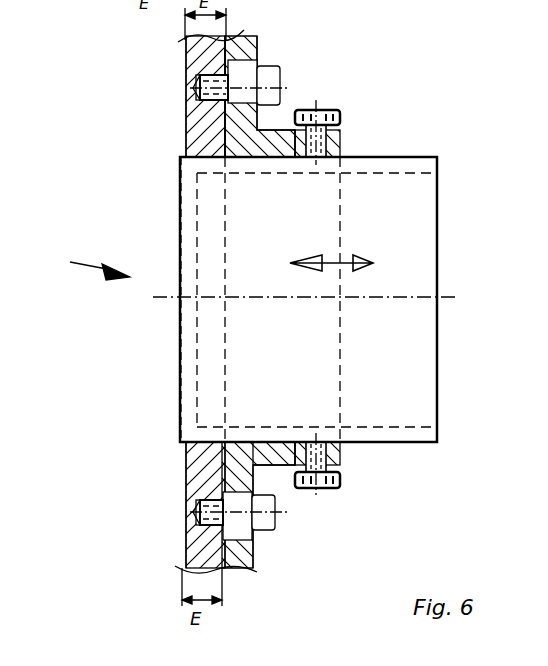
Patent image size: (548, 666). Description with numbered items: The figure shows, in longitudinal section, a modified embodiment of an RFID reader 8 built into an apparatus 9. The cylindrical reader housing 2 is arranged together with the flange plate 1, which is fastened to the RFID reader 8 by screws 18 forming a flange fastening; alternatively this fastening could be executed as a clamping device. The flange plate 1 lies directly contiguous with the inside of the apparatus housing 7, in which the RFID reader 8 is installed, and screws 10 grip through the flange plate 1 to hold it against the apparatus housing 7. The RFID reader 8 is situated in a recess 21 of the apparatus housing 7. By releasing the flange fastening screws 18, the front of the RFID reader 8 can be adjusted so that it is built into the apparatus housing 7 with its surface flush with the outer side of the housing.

The flange plate 1 is at (242, 58).
The reader housing 2 is at (177, 198).
The apparatus housing 7 is at (200, 133).
The RFID reader 8 is at (88, 265).
The apparatus 9 is at (182, 77).
The screws 10 is at (280, 67).
The screws 18 is at (338, 109).
The recess 21 is at (213, 442).